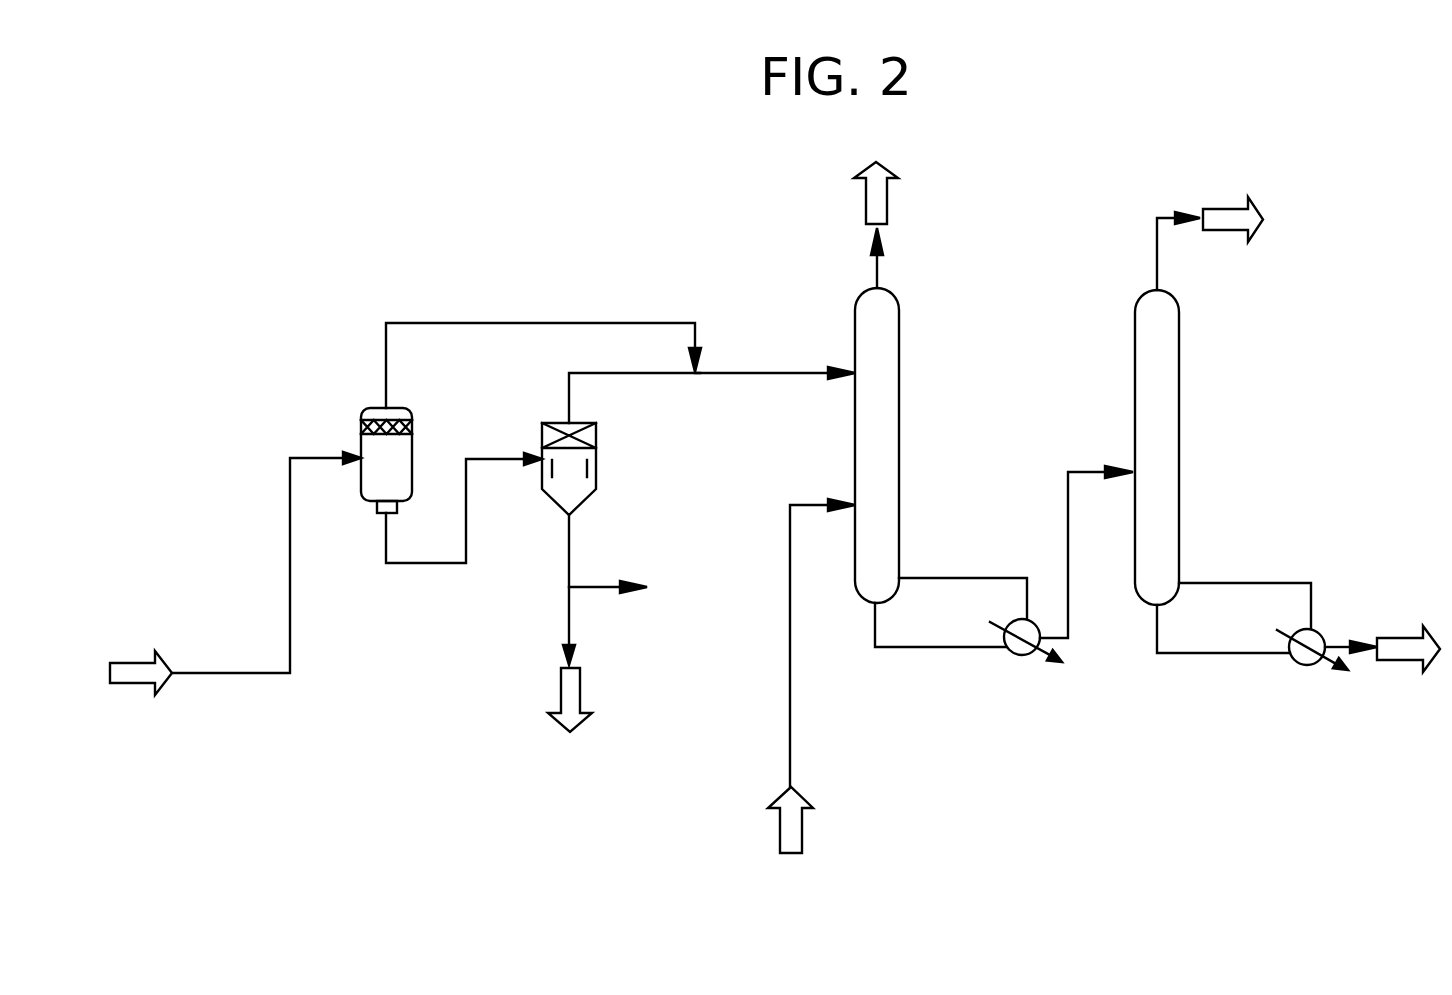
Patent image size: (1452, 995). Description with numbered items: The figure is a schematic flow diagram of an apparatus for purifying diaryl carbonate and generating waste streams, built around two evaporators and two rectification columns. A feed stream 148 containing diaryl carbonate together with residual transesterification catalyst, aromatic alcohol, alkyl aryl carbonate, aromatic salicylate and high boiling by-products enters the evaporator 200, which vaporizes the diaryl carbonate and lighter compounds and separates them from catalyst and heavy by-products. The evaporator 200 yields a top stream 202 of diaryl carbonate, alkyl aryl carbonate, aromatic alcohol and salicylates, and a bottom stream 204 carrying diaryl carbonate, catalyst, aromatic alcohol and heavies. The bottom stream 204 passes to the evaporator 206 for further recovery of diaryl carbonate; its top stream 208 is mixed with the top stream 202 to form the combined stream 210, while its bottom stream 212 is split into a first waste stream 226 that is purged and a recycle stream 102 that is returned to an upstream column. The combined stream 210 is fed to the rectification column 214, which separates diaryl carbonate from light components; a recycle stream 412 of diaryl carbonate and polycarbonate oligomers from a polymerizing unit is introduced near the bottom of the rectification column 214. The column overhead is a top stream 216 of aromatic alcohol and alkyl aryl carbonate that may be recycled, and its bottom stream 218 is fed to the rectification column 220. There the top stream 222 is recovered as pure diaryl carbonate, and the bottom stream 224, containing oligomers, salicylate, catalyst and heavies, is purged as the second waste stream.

The recycle stream 102 is at (560, 693).
The feed stream 148 is at (235, 672).
The evaporator 200 is at (362, 445).
The top stream 202 is at (386, 352).
The bottom stream 204 is at (386, 540).
The evaporator 206 is at (600, 470).
The top stream 208 is at (568, 390).
The combined feed stream 210 is at (800, 371).
The bottom stream 212 is at (568, 538).
The rectification column 214 is at (900, 395).
The top stream 216 is at (878, 275).
The bottom stream 218 is at (1070, 630).
The rectification column 220 is at (1181, 430).
The top stream 222 is at (1165, 217).
The bottom stream 224 is at (1330, 640).
The first waste stream 226 is at (598, 590).
The recycle stream 412 is at (778, 828).